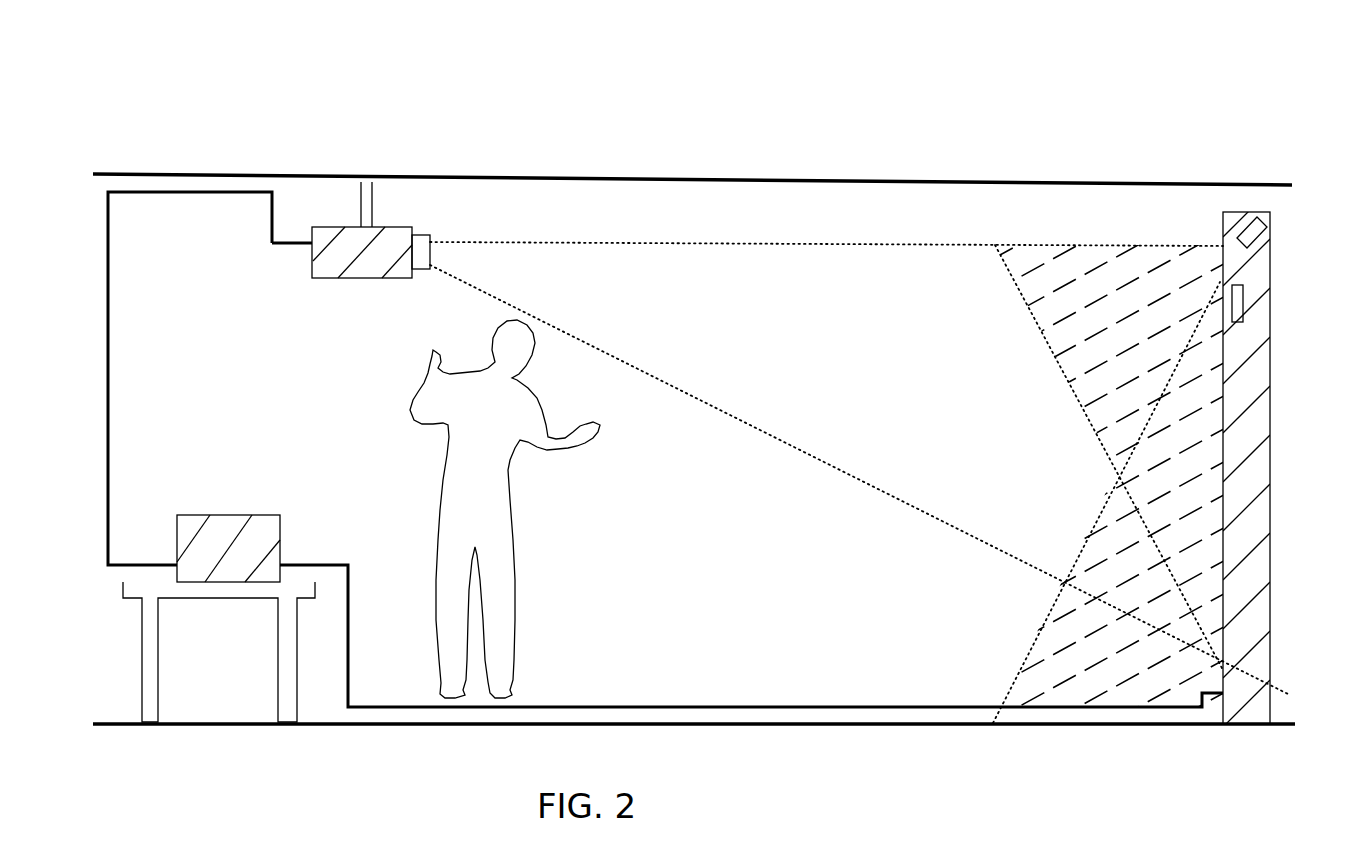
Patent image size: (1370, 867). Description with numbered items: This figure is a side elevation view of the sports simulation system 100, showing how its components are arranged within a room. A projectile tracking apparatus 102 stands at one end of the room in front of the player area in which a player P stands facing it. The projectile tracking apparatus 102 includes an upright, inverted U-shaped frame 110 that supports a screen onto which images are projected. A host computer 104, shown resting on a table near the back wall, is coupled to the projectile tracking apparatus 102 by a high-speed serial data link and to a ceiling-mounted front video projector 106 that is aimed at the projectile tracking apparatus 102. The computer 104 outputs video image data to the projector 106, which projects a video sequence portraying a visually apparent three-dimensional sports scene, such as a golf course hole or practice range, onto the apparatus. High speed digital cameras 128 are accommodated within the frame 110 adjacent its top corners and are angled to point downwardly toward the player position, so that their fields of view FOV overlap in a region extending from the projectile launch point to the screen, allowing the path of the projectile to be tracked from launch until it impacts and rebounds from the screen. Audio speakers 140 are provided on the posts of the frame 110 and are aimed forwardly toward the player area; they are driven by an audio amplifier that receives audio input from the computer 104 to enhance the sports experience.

The sports simulation system 100 is at (847, 148).
The projectile tracking apparatus 102 is at (1222, 156).
The host computer 104 is at (258, 537).
The front video projector 106 is at (392, 243).
The frame 110 is at (1212, 274).
The high speed digital cameras 128 is at (1255, 232).
The audio speakers 140 is at (1241, 288).
The player P is at (548, 452).
The field of view FOV is at (1024, 316).